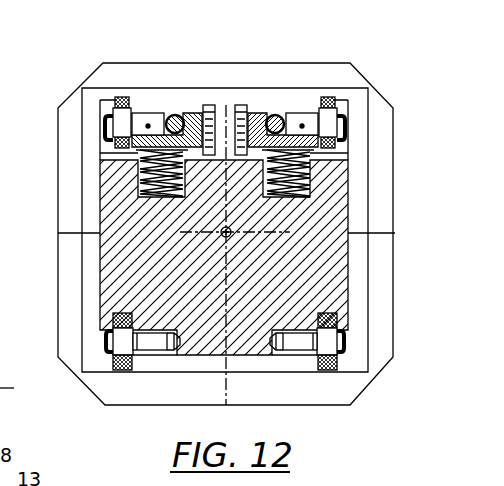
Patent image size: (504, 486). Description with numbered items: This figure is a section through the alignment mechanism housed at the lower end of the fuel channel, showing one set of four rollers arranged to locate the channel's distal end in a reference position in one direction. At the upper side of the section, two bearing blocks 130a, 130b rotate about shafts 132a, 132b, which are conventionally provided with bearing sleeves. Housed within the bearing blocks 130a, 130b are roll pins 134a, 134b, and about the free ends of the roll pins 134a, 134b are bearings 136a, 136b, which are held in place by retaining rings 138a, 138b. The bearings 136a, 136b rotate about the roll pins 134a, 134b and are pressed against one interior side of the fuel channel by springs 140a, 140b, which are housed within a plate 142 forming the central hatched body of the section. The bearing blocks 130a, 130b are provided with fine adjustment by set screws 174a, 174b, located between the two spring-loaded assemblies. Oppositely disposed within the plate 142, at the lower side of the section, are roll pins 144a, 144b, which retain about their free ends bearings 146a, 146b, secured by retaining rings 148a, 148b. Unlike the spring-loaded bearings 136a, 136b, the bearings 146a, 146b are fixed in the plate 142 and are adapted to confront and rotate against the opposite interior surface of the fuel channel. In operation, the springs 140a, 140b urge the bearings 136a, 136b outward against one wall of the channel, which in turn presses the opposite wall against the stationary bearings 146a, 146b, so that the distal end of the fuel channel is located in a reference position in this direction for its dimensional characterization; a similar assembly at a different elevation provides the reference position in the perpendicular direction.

The bearing block 130a is at (147, 112).
The bearing block 130b is at (283, 112).
The shaft 132a is at (176, 113).
The shaft 132b is at (268, 110).
The roll pin 134a is at (135, 112).
The roll pin 134b is at (318, 110).
The bearing 136a is at (113, 100).
The bearing 136b is at (337, 100).
The retaining ring 138a is at (107, 125).
The retaining ring 138b is at (345, 120).
The spring 140a is at (138, 172).
The spring 140b is at (315, 172).
The plate 142 is at (348, 234).
The roll pin 144a is at (157, 350).
The roll pin 144b is at (300, 352).
The bearing 146a is at (125, 368).
The bearing 146b is at (340, 366).
The retaining ring 148a is at (110, 333).
The retaining ring 148b is at (345, 340).
The set screw 174a is at (209, 107).
The set screw 174b is at (239, 107).